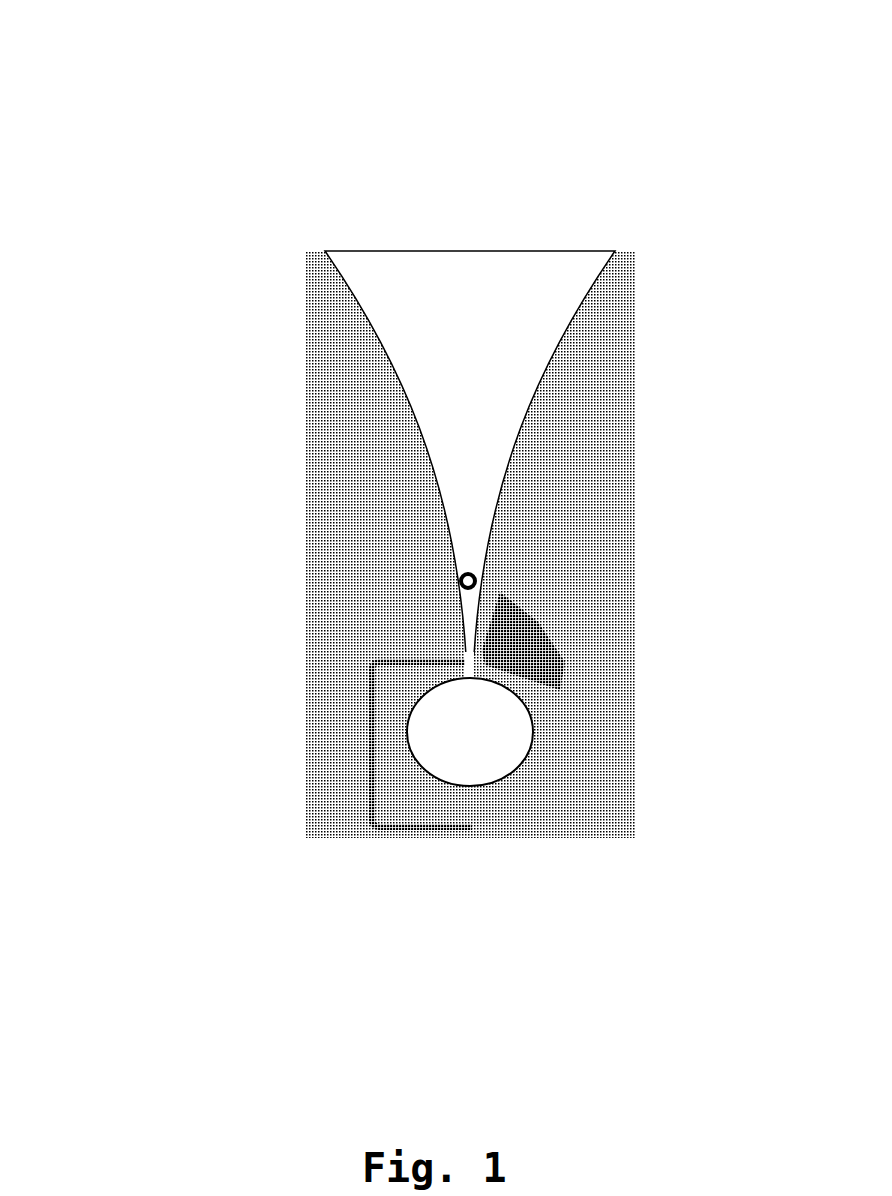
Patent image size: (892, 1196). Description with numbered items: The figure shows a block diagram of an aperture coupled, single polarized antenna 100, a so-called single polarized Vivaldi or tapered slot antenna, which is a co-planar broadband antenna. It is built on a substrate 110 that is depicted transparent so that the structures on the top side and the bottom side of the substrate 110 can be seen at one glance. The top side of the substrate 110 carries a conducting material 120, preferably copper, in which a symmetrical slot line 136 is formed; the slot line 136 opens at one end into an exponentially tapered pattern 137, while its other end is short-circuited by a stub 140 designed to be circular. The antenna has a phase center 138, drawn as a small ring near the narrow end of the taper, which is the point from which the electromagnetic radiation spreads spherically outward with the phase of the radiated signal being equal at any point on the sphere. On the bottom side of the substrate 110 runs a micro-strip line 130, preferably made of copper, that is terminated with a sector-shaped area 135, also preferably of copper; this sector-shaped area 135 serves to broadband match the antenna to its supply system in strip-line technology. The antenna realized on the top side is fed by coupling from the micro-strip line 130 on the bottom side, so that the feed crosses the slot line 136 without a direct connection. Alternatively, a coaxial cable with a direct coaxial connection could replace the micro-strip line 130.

The single polarized antenna 100 is at (103, 100).
The substrate 110 is at (305, 360).
The conducting material 120 is at (337, 575).
The micro-strip line 130 is at (400, 665).
The sector-shaped area 135 is at (525, 655).
The symmetrical slot line 136 is at (464, 640).
The exponentially tapered pattern 137 is at (470, 375).
The phase center 138 is at (476, 572).
The stub 140 is at (498, 778).